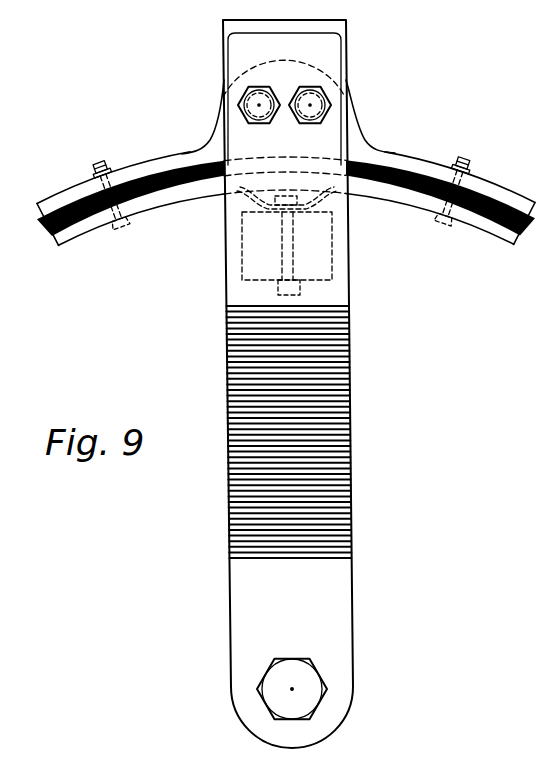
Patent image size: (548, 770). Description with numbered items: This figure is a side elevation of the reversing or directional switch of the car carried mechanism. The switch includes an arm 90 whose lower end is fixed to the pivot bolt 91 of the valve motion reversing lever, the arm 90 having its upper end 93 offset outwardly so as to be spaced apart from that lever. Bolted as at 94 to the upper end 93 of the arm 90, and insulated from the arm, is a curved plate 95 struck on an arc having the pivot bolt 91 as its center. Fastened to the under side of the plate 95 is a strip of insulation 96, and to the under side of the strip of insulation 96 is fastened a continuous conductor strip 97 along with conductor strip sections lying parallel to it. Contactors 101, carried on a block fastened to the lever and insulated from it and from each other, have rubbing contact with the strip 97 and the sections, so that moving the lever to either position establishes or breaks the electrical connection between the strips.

The arm 90 is at (240, 408).
The pivot bolt 91 is at (270, 698).
The upper end of the arm 93 is at (343, 258).
The bolts 94 is at (309, 86).
The curved plate 95 is at (410, 160).
The strip of insulation 96 is at (498, 197).
The continuous conductor strip 97 is at (470, 212).
The contactors 101 is at (252, 200).